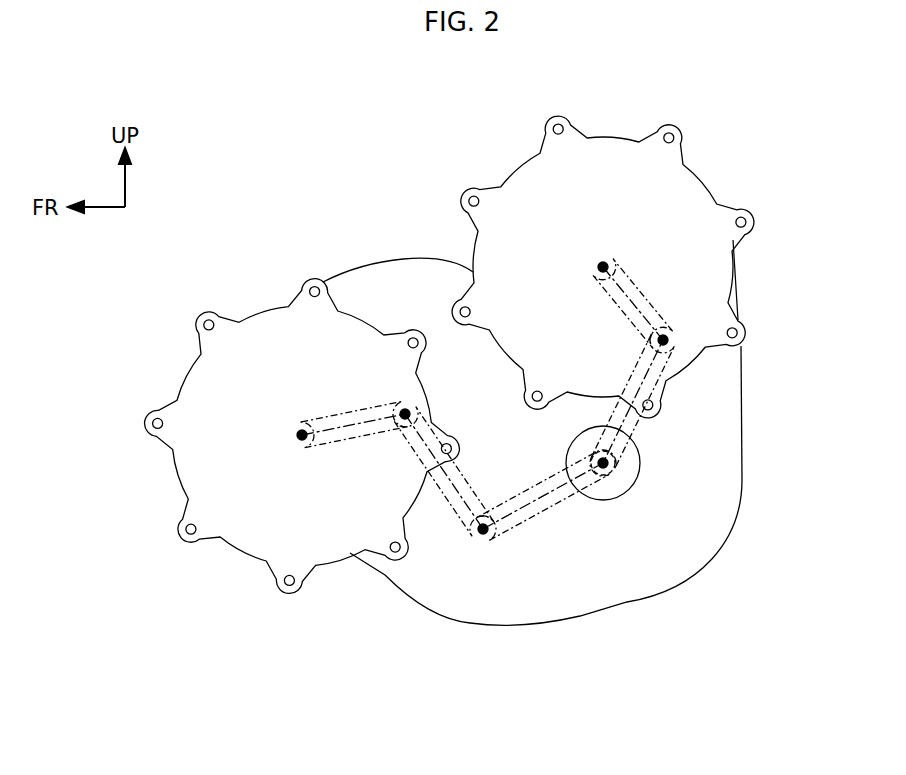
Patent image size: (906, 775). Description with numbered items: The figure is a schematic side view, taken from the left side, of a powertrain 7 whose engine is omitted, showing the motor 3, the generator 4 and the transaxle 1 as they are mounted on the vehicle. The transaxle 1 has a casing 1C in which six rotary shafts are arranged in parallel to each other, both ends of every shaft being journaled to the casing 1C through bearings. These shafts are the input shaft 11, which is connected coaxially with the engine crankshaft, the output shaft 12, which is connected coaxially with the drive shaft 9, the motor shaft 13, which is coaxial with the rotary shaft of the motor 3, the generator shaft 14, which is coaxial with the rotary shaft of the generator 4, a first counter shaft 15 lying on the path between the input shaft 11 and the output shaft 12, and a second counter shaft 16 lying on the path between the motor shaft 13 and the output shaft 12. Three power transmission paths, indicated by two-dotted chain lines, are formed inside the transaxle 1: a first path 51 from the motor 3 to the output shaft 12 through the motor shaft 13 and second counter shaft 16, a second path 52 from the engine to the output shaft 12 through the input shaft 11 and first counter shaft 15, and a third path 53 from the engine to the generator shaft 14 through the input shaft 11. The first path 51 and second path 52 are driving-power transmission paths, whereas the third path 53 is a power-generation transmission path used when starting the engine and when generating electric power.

The transaxle 1 is at (424, 256).
The casing 1C is at (627, 603).
The motor 3 is at (703, 182).
The generator 4 is at (265, 306).
The powertrain 7 is at (366, 209).
The drive shaft 9 is at (640, 453).
The input shaft 11 is at (406, 410).
The output shaft 12 is at (608, 470).
The motor shaft 13 is at (603, 260).
The generator shaft 14 is at (288, 436).
The first counter shaft 15 is at (481, 543).
The second counter shaft 16 is at (666, 344).
The first path 51 is at (628, 270).
The second path 52 is at (563, 503).
The third path 53 is at (347, 410).